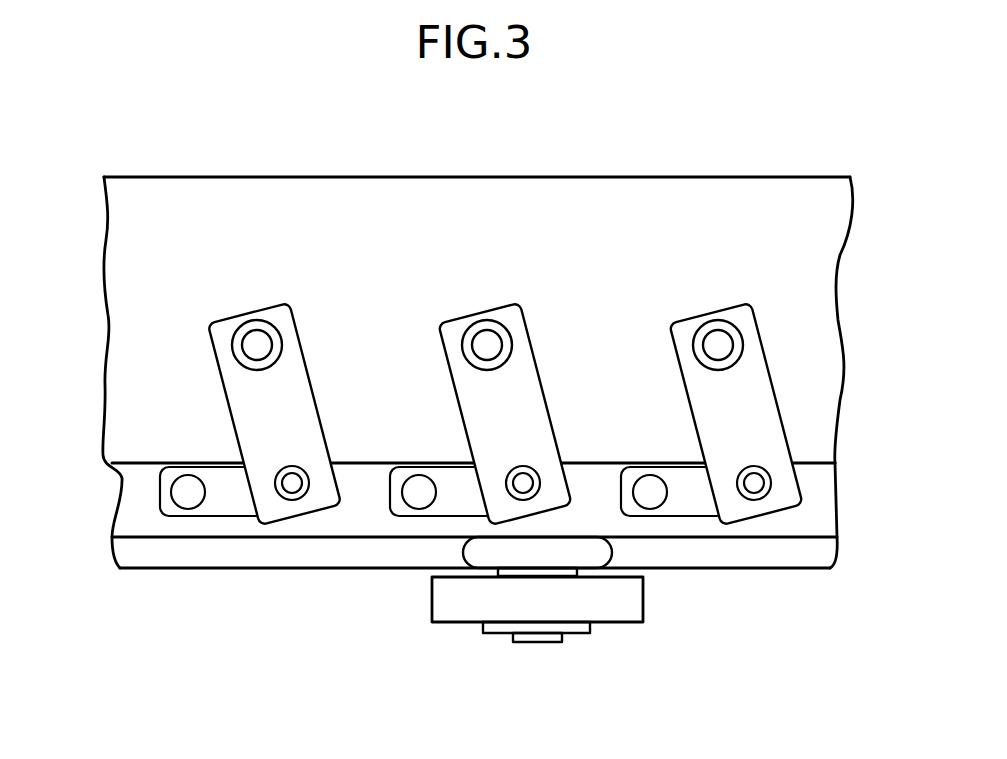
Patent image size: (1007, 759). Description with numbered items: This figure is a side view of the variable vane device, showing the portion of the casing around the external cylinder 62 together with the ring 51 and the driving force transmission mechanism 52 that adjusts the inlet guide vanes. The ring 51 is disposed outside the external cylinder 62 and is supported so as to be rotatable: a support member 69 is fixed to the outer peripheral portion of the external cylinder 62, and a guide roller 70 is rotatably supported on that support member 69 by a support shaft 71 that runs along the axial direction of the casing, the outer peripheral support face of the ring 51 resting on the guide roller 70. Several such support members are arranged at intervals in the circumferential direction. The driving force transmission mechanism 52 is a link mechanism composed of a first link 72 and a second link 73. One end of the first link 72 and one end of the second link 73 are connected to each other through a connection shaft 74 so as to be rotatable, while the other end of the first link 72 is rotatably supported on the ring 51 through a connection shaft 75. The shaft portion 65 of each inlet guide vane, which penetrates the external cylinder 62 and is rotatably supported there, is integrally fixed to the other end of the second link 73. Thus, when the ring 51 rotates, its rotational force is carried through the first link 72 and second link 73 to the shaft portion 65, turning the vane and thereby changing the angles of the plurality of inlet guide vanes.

The ring 51 is at (835, 500).
The driving force transmission mechanism 52 is at (795, 358).
The external cylinder 62 is at (120, 380).
The shaft portion 65 is at (257, 345).
The support member 69 is at (618, 610).
The guide roller 70 is at (593, 553).
The support shaft 71 is at (538, 645).
The first link 72 is at (233, 490).
The second link 73 is at (287, 377).
The connection shaft 74 is at (292, 485).
The connection shaft 75 is at (188, 493).